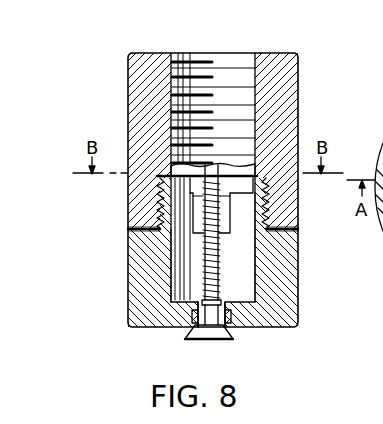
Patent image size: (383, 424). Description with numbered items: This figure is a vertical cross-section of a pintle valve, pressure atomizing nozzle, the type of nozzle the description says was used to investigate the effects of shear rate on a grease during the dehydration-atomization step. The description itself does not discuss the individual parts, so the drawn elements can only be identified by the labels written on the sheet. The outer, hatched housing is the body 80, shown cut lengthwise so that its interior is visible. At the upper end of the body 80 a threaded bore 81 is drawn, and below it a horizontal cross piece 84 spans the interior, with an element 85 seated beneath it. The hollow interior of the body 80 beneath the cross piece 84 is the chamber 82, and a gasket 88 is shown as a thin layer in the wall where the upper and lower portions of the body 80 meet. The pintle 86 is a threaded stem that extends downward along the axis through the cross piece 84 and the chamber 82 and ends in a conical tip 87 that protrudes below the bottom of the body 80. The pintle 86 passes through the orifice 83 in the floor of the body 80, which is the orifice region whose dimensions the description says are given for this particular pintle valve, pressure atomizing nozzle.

The body 80 is at (291, 107).
The threaded bore 81 is at (222, 80).
The chamber 82 is at (143, 270).
The orifice 83 is at (237, 330).
The cross piece 84 is at (182, 181).
The nut 85 is at (217, 184).
The pintle 86 is at (205, 281).
The pintle tip 87 is at (203, 340).
The gasket 88 is at (289, 230).